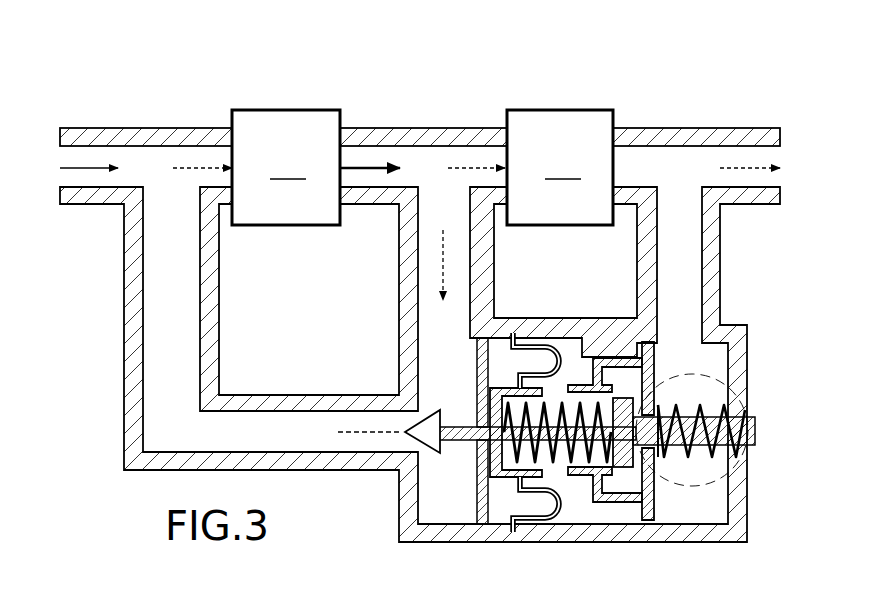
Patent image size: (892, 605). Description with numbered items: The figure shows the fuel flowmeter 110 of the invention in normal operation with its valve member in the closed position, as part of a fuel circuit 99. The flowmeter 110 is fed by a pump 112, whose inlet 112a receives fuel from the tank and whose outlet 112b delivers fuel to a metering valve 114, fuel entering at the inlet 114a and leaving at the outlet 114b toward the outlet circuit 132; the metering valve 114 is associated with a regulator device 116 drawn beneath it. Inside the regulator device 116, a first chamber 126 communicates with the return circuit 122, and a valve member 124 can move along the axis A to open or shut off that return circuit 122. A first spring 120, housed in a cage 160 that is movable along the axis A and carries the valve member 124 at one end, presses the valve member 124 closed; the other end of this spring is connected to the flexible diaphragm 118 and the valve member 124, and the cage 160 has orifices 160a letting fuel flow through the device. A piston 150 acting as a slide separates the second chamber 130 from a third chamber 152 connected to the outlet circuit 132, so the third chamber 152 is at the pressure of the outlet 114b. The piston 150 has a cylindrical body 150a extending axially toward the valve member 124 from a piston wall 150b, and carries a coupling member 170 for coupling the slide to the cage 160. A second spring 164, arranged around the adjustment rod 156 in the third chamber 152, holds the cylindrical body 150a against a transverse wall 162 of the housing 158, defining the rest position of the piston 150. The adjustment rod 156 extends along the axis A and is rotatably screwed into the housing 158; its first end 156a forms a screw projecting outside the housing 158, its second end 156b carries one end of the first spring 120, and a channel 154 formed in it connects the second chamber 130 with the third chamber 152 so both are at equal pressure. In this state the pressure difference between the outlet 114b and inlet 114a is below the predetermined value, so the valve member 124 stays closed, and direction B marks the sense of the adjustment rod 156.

The fuel circuit 99 is at (258, 80).
The fuel flowmeter 110 is at (708, 98).
The pump 112 is at (283, 159).
The pump inlet 112a is at (181, 160).
The pump outlet 112b is at (352, 160).
The metering valve 114 is at (560, 159).
The inlet of the metering valve 114a is at (448, 160).
The outlet of the metering valve 114b is at (660, 160).
The regulator device 116 is at (762, 517).
The flexible diaphragm 118 is at (530, 532).
The first spring 120 is at (705, 503).
The return circuit 122 is at (433, 320).
The valve member 124 is at (435, 450).
The first chamber 126 is at (518, 357).
The second chamber 130 is at (570, 357).
The outlet circuit 132 is at (683, 263).
The piston 150 is at (694, 434).
The cylindrical body 150a is at (610, 358).
The piston wall 150b is at (658, 370).
The third chamber 152 is at (708, 363).
The channel 154 is at (673, 417).
The adjustment rod 156 is at (630, 414).
The first end of the adjustment rod 156a is at (755, 417).
The second end of the adjustment rod 156b is at (627, 502).
The housing 158 is at (442, 535).
The cage 160 is at (493, 384).
The orifices 160a is at (537, 527).
The wall of the housing 162 is at (593, 492).
The second spring 164 is at (753, 447).
The coupling member 170 is at (622, 378).
The axis A is at (366, 433).
The direction B is at (720, 485).